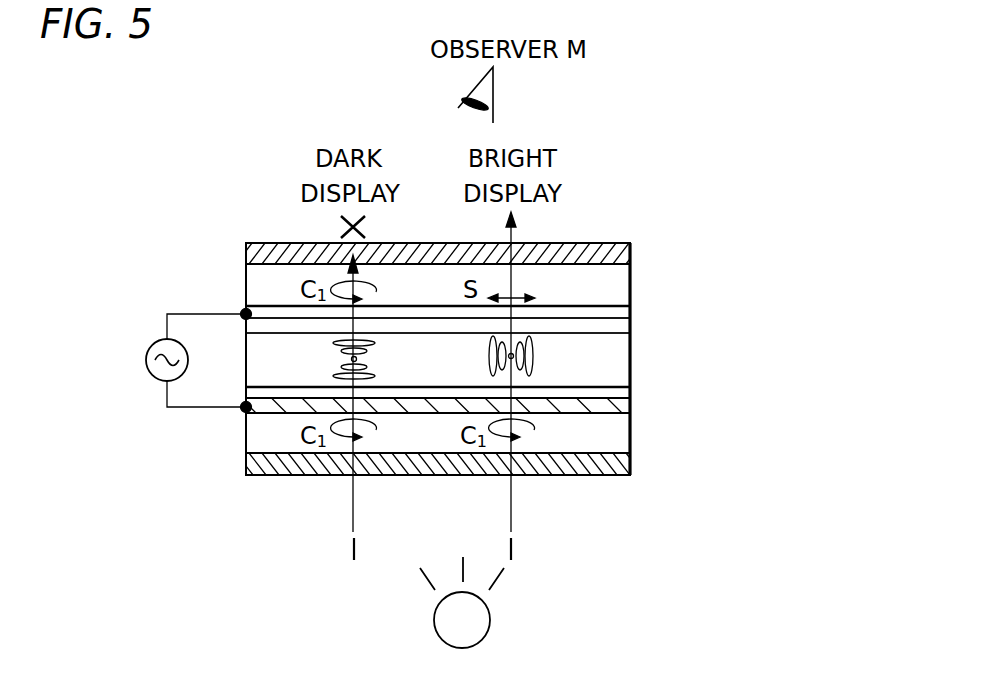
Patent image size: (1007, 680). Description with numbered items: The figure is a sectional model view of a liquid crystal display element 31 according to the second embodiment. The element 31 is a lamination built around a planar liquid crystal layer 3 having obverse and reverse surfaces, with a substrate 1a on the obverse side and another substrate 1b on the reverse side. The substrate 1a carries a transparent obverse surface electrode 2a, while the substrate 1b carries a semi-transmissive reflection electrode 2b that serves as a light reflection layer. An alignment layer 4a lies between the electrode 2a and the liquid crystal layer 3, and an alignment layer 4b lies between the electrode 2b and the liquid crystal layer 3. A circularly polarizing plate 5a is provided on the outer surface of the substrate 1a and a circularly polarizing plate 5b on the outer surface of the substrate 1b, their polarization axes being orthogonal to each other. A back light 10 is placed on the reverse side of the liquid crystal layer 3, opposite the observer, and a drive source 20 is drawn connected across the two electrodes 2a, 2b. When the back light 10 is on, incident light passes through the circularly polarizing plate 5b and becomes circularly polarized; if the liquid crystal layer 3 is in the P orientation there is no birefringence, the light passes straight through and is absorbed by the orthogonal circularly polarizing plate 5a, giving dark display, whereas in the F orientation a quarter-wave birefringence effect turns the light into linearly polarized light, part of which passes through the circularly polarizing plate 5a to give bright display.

The liquid crystal display element 31 is at (614, 206).
The circularly polarizing plate 5a is at (632, 250).
The substrate 1a is at (632, 276).
The transparent obverse surface electrode 2a is at (632, 304).
The alignment layer 4a is at (632, 332).
The liquid crystal layer 3 is at (632, 357).
The alignment layer 4b is at (632, 383).
The semi-transmissive reflection electrode 2b is at (632, 410).
The substrate 1b is at (632, 437).
The circularly polarizing plate 5b is at (632, 467).
The power source 20 is at (146, 358).
The back light 10 is at (492, 616).